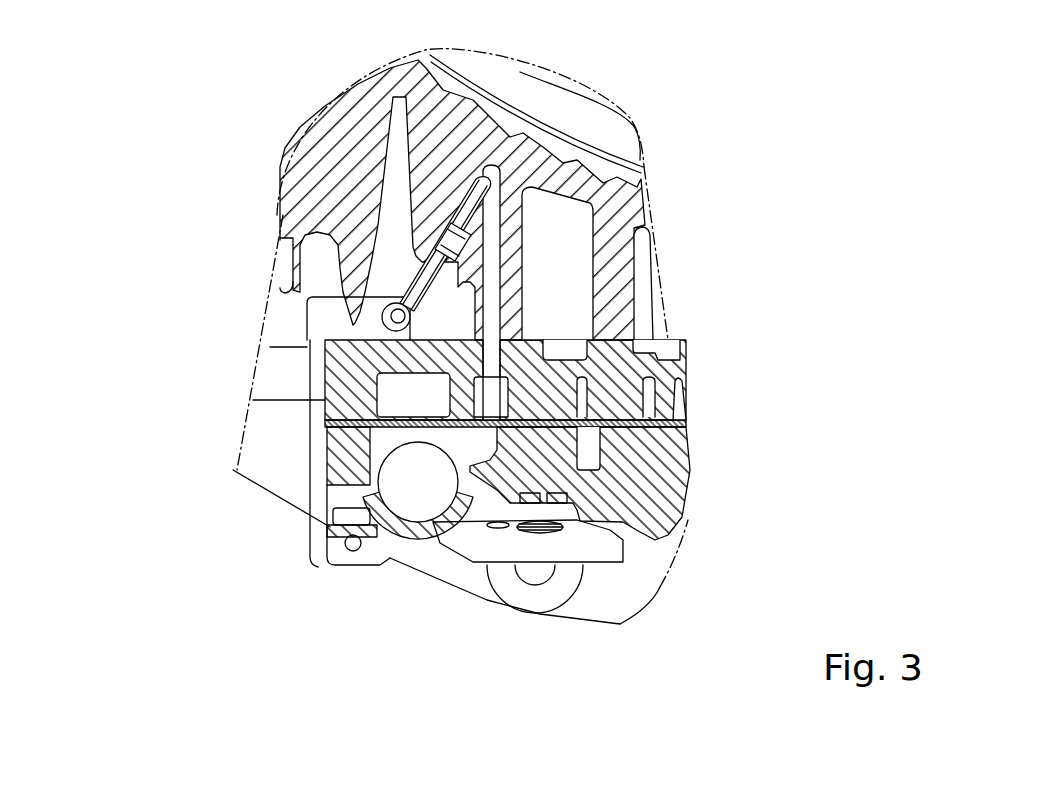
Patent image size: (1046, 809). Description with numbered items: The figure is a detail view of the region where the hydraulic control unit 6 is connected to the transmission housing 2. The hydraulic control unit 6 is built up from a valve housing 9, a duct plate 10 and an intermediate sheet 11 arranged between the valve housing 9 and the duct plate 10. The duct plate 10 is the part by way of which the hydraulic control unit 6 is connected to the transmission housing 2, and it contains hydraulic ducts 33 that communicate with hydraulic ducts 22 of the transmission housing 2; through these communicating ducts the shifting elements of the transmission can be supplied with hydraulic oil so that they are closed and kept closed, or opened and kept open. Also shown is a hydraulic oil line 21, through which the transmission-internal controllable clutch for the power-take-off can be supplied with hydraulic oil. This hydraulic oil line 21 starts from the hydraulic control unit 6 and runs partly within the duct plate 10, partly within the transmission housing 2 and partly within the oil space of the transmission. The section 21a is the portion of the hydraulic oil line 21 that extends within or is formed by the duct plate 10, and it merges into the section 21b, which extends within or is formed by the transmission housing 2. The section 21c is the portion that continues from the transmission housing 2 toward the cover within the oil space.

The transmission housing 2 is at (343, 157).
The hydraulic control unit 6 is at (310, 450).
The valve housing 9 is at (660, 503).
The duct plate 10 is at (663, 370).
The intermediate sheet 11 is at (658, 423).
The hydraulic oil line 21 is at (476, 281).
The section of the hydraulic oil line 21a is at (490, 362).
The section of the hydraulic oil line 21b is at (494, 233).
The section of the hydraulic oil line 21c is at (420, 262).
The hydraulic ducts 22 is at (574, 281).
The hydraulic ducts 33 is at (574, 383).